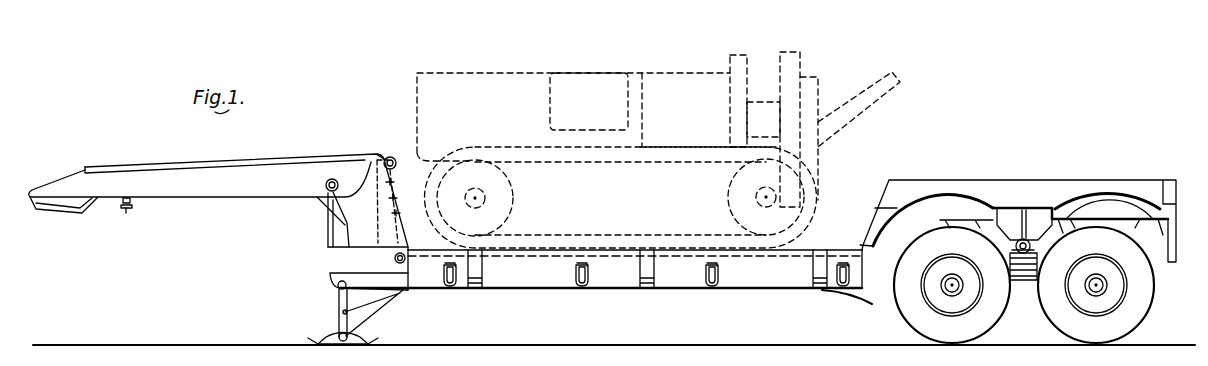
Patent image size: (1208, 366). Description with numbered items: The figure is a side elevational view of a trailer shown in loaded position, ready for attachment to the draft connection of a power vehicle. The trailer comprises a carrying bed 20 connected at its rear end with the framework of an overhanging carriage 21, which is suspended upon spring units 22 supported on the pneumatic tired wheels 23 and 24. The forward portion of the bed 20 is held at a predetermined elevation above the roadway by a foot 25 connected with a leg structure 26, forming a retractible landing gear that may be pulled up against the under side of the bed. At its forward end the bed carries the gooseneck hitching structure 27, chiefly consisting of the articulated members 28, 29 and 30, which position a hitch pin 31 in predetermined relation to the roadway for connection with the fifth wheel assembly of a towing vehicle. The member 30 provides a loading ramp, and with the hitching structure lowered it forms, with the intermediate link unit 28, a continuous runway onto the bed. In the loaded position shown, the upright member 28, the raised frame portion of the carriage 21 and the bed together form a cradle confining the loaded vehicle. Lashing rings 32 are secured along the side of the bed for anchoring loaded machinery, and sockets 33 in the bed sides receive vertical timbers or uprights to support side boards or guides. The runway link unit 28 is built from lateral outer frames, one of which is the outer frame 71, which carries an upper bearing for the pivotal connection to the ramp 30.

The carrying bed 20 is at (560, 280).
The overhanging carriage 21 is at (1007, 190).
The spring units 22 is at (1024, 271).
The pneumatic tired wheel 23 is at (908, 312).
The pneumatic tired wheel 24 is at (1138, 312).
The foot 25 is at (330, 338).
The leg structure 26 is at (340, 300).
The gooseneck hitching structure 27 is at (241, 205).
The upright member 28 is at (418, 221).
The articulated member 29 is at (325, 224).
The ramp member 30 is at (220, 170).
The hitch pin 31 is at (125, 213).
The lashing rings 32 is at (453, 287).
The sockets 33 is at (478, 272).
The outer frame 71 is at (376, 238).